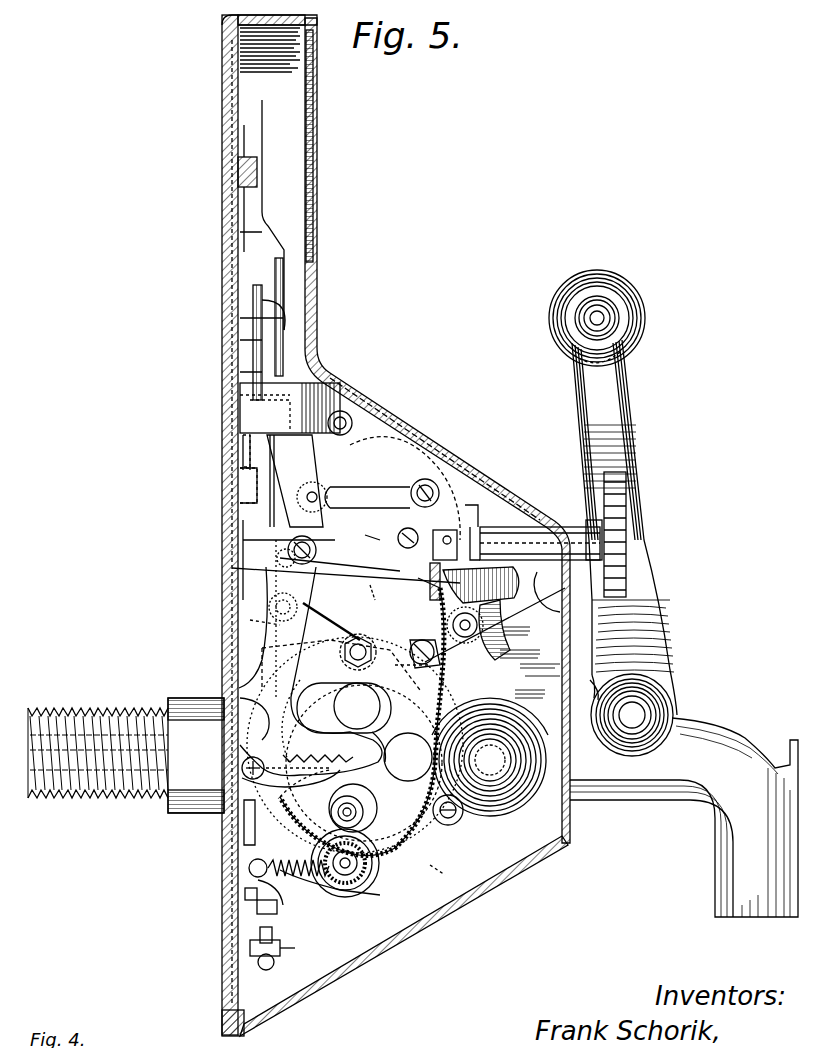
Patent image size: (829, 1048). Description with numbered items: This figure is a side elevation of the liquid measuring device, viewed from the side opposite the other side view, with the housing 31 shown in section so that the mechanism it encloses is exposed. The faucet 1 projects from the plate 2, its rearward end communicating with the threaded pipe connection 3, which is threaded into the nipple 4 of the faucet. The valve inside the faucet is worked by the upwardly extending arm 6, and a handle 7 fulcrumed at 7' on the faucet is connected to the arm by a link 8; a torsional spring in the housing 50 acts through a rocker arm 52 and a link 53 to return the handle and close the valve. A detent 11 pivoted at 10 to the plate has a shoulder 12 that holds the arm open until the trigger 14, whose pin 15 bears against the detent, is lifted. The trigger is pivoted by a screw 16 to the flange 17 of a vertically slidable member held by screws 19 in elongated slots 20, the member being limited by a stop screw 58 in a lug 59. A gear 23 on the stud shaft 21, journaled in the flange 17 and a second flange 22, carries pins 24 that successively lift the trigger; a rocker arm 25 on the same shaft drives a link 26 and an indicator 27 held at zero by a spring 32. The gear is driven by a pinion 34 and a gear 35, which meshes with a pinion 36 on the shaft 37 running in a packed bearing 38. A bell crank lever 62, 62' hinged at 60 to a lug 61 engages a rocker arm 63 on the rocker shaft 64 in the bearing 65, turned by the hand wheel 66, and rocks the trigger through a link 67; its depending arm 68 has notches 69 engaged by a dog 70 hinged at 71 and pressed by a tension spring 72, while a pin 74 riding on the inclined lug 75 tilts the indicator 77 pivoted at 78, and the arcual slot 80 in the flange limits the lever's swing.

The faucet 1 is at (648, 810).
The plate 2 is at (230, 462).
The threaded pipe connection 3 is at (120, 712).
The nipple 4 is at (200, 813).
The arm 6 is at (470, 706).
The handle 7 is at (613, 492).
The fulcrum 7' is at (650, 678).
The link 8 is at (530, 610).
The pivot 10 is at (400, 781).
The detent 11 is at (495, 625).
The shoulder 12 is at (520, 632).
The trigger 14 is at (455, 532).
The pin 15 is at (362, 717).
The screw 16 is at (398, 478).
The flange 17 is at (316, 481).
The screws 19 is at (284, 902).
The elongated slots 20 is at (256, 845).
The stud shaft 21 is at (360, 636).
The second flange 22 is at (355, 745).
The gear 23 is at (435, 665).
The pins 24 is at (431, 677).
The rocker arm 25 is at (300, 627).
The link 26 is at (250, 516).
The indicator 27 is at (238, 232).
The housing 31 is at (455, 455).
The helical tension spring 32 is at (380, 895).
The pinion 34 is at (396, 808).
The gear 35 is at (400, 832).
The pinion 36 is at (454, 875).
The shaft 37 is at (372, 872).
The packed bearing 38 is at (370, 858).
The housing 50 is at (400, 462).
The rocker arm 52 is at (240, 596).
The link 53 is at (540, 665).
The stop screw 58 is at (257, 912).
The lug 59 is at (301, 949).
The hinge 60 is at (308, 558).
The lug 61 is at (250, 542).
The bell crank lever arm 62 is at (363, 596).
The bell crank lever arm 62' is at (288, 509).
The rocker arm 63 is at (500, 578).
The rocker shaft 64 is at (492, 506).
The bearing 65 is at (520, 542).
The hand wheel 66 is at (626, 556).
The link 67 is at (372, 490).
The depending arm 68 is at (265, 695).
The notches 69 is at (309, 771).
The dog 70 is at (342, 731).
The hinge 71 is at (242, 768).
The tension spring 72 is at (300, 878).
The pin 74 is at (346, 564).
The inclined lug 75 is at (268, 430).
The indicator 77 is at (286, 190).
The pivot 78 is at (283, 320).
The arcual slot 80 is at (359, 533).